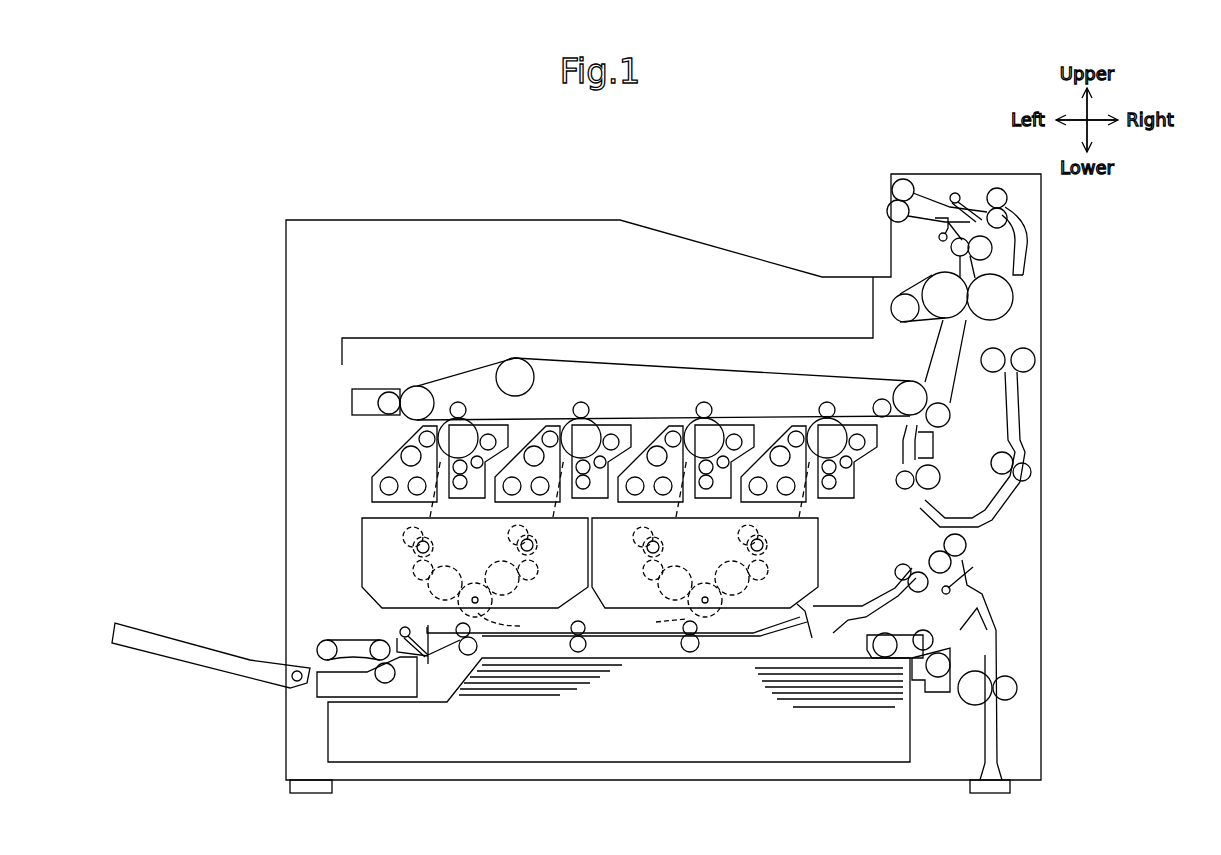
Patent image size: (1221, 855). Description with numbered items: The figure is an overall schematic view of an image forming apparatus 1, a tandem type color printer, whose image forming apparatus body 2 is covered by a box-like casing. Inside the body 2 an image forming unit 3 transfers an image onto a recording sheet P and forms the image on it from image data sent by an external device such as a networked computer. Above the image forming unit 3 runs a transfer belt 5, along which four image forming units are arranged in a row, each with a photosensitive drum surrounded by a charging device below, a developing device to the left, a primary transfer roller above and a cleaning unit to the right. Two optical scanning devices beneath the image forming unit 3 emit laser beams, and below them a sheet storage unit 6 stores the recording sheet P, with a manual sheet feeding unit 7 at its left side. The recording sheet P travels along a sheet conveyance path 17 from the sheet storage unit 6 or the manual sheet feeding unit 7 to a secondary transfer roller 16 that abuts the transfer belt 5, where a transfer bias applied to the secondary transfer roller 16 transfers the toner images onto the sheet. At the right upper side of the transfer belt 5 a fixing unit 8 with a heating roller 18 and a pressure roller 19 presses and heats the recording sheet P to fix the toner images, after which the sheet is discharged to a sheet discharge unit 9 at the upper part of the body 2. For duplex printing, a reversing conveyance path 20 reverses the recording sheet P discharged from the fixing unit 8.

The image forming apparatus 1 is at (594, 181).
The image forming apparatus body 2 is at (348, 220).
The image forming unit 3 is at (362, 452).
The transfer belt 5 is at (678, 350).
The sheet storage unit 6 is at (619, 736).
The manual sheet feeding unit 7 is at (179, 644).
The fixing unit 8 is at (984, 256).
The sheet discharge unit 9 is at (735, 247).
The secondary transfer roller 16 is at (951, 414).
The sheet conveyance path 17 is at (980, 572).
The heating roller 18 is at (936, 280).
The pressure roller 19 is at (1013, 303).
The reversing conveyance path 20 is at (1024, 404).
The recording sheet P is at (525, 680).